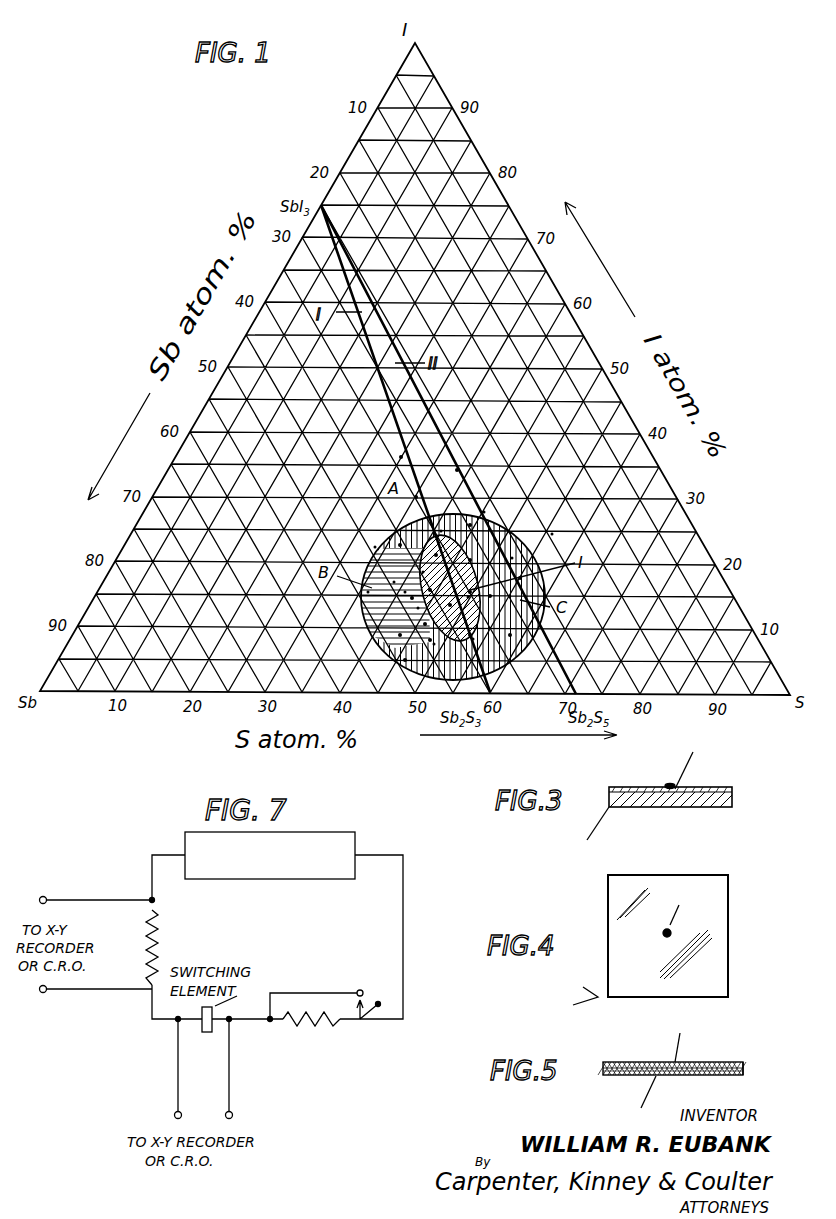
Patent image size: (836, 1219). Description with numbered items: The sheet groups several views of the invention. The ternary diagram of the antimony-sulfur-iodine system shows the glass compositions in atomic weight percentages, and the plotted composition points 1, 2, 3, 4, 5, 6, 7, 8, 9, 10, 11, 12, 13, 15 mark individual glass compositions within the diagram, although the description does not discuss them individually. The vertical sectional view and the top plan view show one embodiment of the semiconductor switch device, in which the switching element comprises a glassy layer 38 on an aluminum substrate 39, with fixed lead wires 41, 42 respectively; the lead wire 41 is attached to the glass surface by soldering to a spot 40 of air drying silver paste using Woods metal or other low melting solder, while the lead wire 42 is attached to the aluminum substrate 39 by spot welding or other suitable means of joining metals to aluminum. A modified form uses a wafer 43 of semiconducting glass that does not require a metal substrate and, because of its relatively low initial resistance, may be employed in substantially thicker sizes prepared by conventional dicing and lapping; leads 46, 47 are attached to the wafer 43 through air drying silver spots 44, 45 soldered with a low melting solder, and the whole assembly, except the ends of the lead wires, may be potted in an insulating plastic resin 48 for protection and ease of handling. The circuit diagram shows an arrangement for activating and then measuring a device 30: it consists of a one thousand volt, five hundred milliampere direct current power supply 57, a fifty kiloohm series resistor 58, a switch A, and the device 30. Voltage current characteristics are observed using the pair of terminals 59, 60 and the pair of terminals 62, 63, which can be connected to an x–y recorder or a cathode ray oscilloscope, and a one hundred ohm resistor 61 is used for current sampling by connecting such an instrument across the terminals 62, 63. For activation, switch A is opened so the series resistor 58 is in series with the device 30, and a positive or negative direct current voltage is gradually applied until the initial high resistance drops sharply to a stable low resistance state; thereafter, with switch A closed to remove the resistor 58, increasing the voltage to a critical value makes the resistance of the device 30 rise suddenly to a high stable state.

In FIG. 1, the composition point 1 is at (472, 592).
In FIG. 1, the composition point 2 is at (422, 603).
In FIG. 1, the composition point 3 is at (398, 609).
In FIG. 1, the composition point 4 is at (372, 587).
In FIG. 1, the composition point 5 is at (379, 542).
In FIG. 1, the composition point 6 is at (398, 577).
In FIG. 1, the composition point 7 is at (427, 567).
In FIG. 1, the composition point 8 is at (445, 526).
In FIG. 1, the composition point 9 is at (438, 639).
In FIG. 1, the composition point 10 is at (481, 634).
In FIG. 1, the composition point 11 is at (521, 553).
In FIG. 1, the composition point 12 is at (427, 492).
In FIG. 1, the composition point 13 is at (493, 507).
In FIG. 1, the composition point 15 is at (562, 530).
In FIG. 7, the device 30 is at (206, 1032).
In FIG. 3, the glassy layer 38 is at (725, 779).
In FIG. 4, the glassy layer 38 is at (598, 891).
In FIG. 3, the aluminum substrate 39 is at (712, 800).
In FIG. 3, the spot of air drying silver paste 40 is at (667, 784).
In FIG. 4, the spot of air drying silver paste 40 is at (661, 938).
In FIG. 3, the lead wire 41 is at (682, 766).
In FIG. 4, the lead wire 41 is at (676, 900).
In FIG. 3, the lead wire 42 is at (599, 822).
In FIG. 4, the lead wire 42 is at (576, 991).
In FIG. 5, the wafer 43 is at (716, 1063).
In FIG. 5, the air drying silver spot 44 is at (672, 1063).
In FIG. 5, the air drying silver spot 45 is at (672, 1076).
In FIG. 5, the lead 46 is at (681, 1050).
In FIG. 5, the lead 47 is at (651, 1089).
In FIG. 5, the insulating plastic resin 48 is at (746, 1068).
In FIG. 7, the direct current power supply 57 is at (348, 841).
In FIG. 7, the series resistor 58 is at (348, 1030).
In FIG. 7, the terminal 59 is at (172, 1119).
In FIG. 7, the terminal 60 is at (235, 1118).
In FIG. 7, the resistor 61 is at (178, 946).
In FIG. 7, the terminal 62 is at (45, 895).
In FIG. 7, the terminal 63 is at (44, 994).